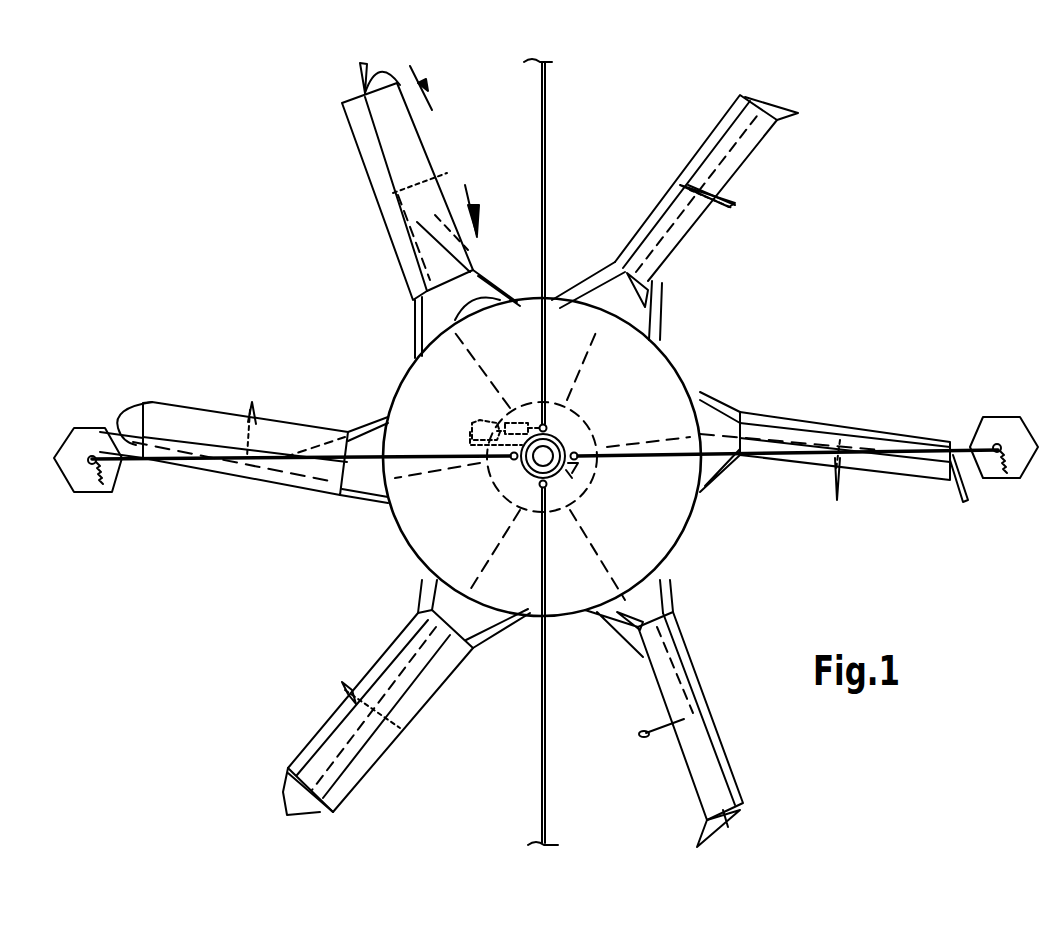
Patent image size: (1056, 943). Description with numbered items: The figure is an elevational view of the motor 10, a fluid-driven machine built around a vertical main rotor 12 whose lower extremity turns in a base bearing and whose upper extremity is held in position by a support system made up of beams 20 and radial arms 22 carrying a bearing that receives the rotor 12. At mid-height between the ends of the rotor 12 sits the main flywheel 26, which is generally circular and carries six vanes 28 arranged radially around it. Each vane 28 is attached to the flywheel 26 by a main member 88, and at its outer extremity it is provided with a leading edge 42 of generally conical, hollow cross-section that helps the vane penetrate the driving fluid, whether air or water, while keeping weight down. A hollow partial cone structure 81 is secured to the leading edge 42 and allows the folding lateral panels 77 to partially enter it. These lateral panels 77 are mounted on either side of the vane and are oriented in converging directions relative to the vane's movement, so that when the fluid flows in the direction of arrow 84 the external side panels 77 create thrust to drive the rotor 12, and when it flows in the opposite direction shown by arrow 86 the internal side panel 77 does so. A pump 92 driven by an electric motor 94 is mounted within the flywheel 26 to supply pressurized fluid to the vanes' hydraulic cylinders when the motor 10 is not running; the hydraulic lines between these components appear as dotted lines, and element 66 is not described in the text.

The motor 10 is at (700, 318).
The main rotor 12 is at (527, 473).
The beams 20 is at (90, 480).
The radial arms 22 is at (545, 150).
The main flywheel 26 is at (685, 365).
The vanes 28 is at (352, 155).
The leading edge 42 is at (385, 228).
The fastener 66 is at (645, 740).
The folding lateral panels 77 is at (360, 66).
The partial cone structure 81 is at (345, 92).
The arrow 84 is at (425, 92).
The arrow 86 is at (470, 200).
The main member 88 is at (418, 338).
The pump 92 is at (512, 420).
The electric motor 94 is at (472, 420).